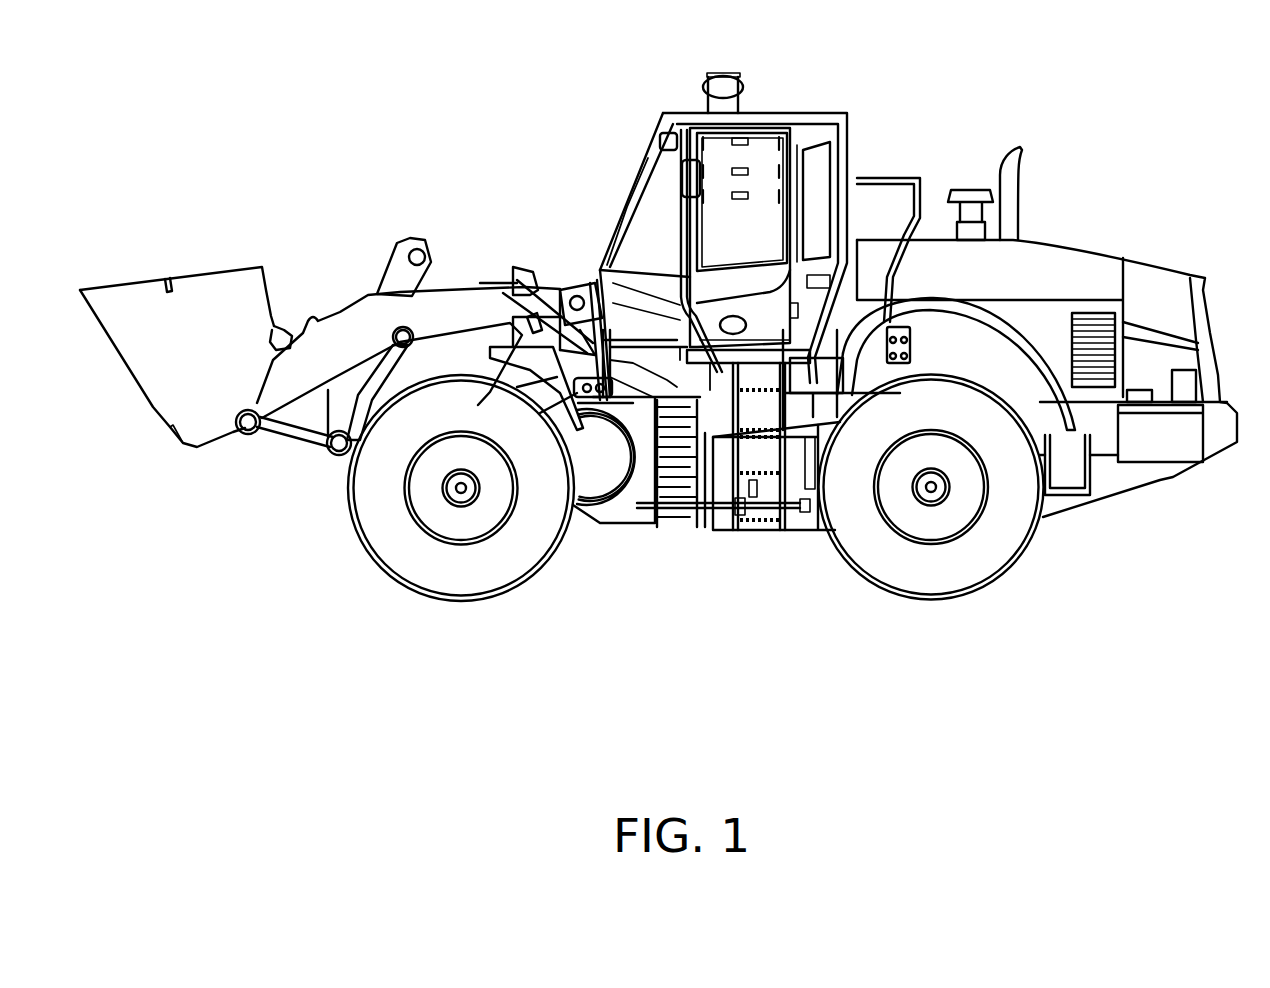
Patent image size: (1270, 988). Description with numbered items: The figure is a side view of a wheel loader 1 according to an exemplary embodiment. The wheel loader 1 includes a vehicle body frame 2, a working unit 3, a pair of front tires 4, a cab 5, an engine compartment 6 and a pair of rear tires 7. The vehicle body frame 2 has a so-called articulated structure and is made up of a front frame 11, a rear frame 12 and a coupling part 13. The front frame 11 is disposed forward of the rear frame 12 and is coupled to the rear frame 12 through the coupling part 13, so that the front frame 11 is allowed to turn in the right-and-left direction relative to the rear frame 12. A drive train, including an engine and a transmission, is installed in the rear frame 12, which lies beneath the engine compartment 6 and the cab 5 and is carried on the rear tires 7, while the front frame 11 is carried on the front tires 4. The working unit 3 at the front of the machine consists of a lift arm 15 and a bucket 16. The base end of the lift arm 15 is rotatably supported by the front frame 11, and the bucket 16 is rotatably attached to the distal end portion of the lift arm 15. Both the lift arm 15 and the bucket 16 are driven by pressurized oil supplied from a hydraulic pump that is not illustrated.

The wheel loader 1 is at (457, 128).
The vehicle body frame 2 is at (753, 640).
The working unit 3 is at (347, 209).
The front tires 4 is at (470, 604).
The cab 5 is at (803, 113).
The engine compartment 6 is at (1093, 247).
The rear tires 7 is at (941, 602).
The front frame 11 is at (628, 527).
The rear frame 12 is at (755, 527).
The coupling part 13 is at (700, 527).
The lift arm 15 is at (355, 317).
The bucket 16 is at (251, 301).